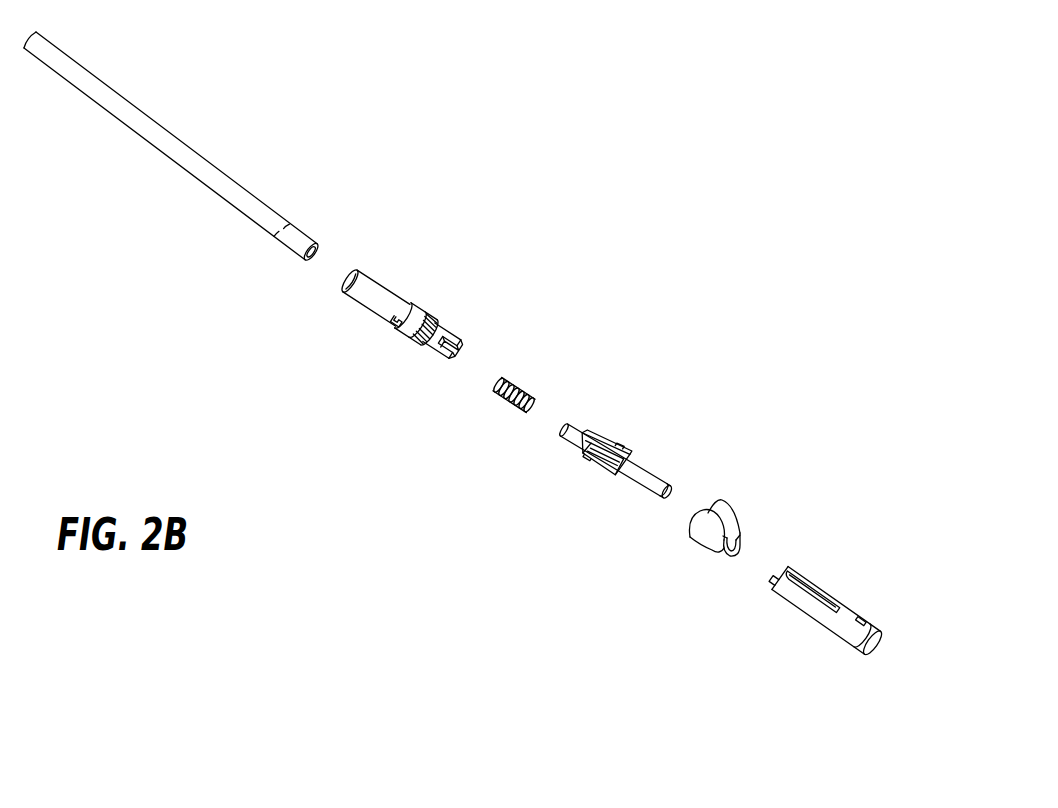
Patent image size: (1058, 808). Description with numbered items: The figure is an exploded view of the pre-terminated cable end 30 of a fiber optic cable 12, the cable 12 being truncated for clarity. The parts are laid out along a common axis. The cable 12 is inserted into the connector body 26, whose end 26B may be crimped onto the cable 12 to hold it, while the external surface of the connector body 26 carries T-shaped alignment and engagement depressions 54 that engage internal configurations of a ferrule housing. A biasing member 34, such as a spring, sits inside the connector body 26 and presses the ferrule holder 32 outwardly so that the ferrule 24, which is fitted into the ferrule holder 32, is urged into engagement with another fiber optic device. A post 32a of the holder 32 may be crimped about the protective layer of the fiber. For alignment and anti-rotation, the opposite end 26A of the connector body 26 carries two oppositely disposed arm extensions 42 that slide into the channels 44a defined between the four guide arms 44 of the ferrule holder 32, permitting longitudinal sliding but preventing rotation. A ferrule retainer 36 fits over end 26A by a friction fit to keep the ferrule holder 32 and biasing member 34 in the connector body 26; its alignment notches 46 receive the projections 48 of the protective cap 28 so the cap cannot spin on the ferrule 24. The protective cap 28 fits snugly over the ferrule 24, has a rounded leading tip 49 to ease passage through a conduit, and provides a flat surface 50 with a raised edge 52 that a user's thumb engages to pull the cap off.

The cable 12 is at (187, 183).
The pre-terminated cable end 30 is at (704, 294).
The connector body 26 is at (394, 326).
The end of connector body 26A is at (437, 320).
The end of connector body 26B is at (363, 270).
The arm extension 42 is at (450, 368).
The T-shaped alignment and engagement depression 54 is at (393, 326).
The biasing member 34 is at (518, 382).
The ferrule 24 is at (600, 446).
The ferrule holder 32 is at (574, 446).
The post 32a is at (566, 424).
The guide arm 44 is at (618, 448).
The channel 44a is at (590, 452).
The ferrule retainer 36 is at (718, 545).
The alignment notch 46 is at (722, 500).
The protective cap 28 is at (823, 610).
The raised edge 52 is at (838, 600).
The leading tip 49 is at (872, 623).
The flat surface 50 is at (775, 586).
The projection 48 is at (772, 580).